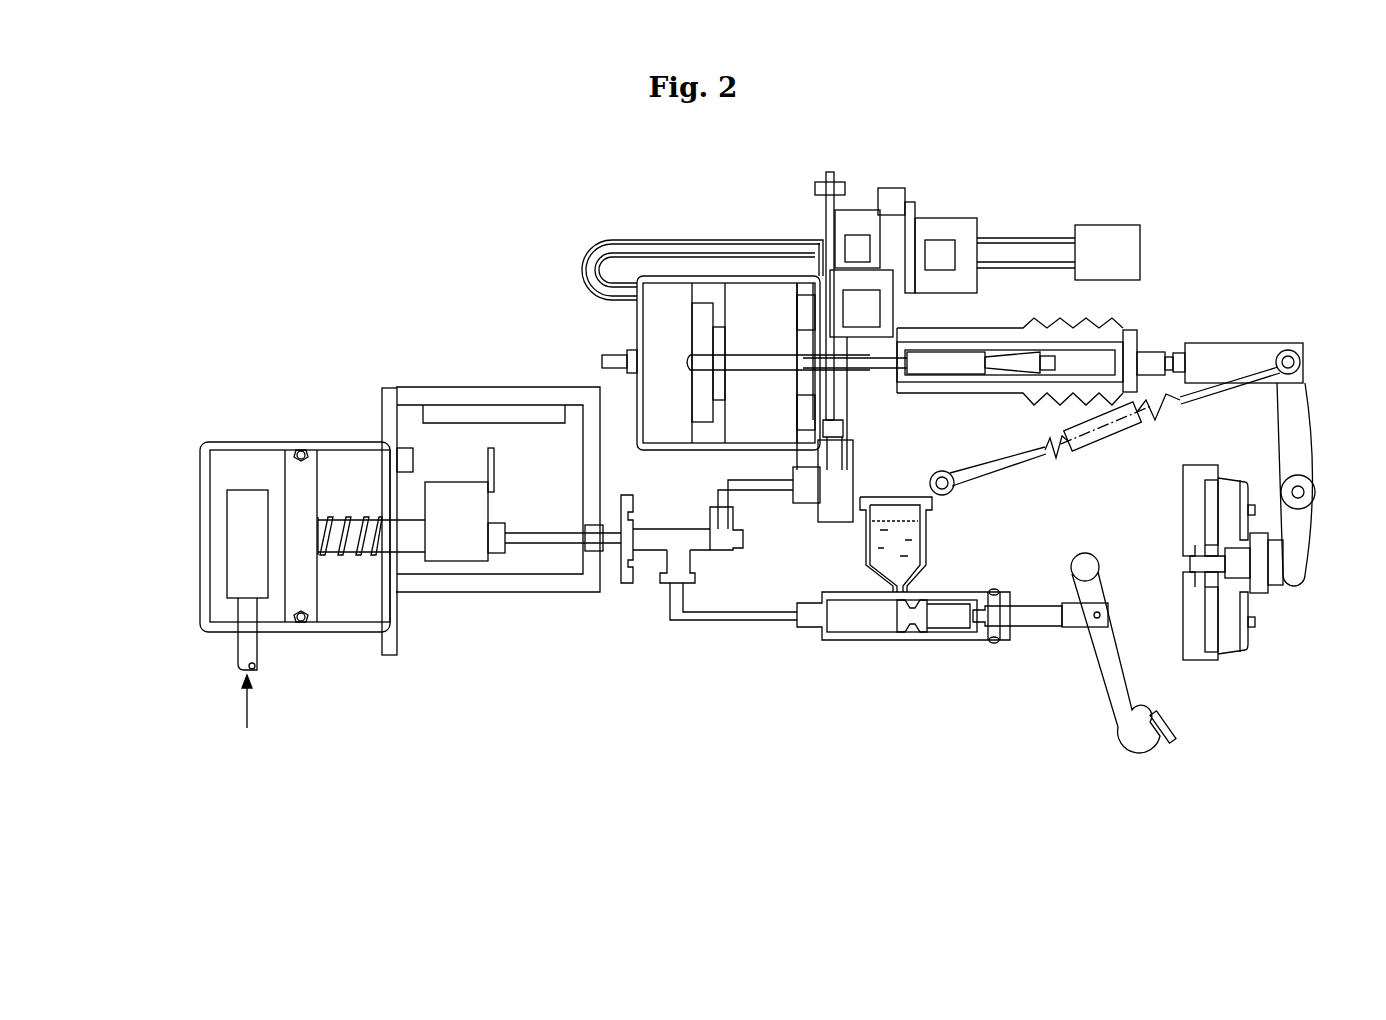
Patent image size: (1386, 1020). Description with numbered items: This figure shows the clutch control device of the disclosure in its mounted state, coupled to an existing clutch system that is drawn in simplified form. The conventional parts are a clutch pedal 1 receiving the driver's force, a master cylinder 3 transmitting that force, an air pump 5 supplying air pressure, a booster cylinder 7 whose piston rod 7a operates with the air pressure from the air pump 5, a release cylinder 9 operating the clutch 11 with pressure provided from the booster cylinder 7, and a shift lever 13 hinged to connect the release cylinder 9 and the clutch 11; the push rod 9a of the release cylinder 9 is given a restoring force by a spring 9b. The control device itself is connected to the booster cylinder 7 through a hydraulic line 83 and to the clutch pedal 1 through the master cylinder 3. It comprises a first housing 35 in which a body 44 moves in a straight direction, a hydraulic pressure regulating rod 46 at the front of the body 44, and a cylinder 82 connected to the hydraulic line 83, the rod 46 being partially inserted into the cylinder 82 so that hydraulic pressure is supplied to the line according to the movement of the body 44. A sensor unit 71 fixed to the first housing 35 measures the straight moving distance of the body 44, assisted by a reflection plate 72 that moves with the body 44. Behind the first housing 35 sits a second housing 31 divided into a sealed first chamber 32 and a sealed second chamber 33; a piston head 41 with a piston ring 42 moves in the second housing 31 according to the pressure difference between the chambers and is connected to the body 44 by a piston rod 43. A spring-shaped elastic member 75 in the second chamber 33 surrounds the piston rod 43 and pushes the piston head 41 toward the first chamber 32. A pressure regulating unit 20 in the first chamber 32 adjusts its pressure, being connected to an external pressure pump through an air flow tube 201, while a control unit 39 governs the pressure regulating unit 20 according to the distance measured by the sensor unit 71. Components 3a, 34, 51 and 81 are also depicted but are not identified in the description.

The clutch pedal 1 is at (1175, 742).
The master cylinder 3 is at (853, 640).
The piston 3a is at (942, 620).
The air pump 5 is at (1107, 226).
The booster cylinder 7 is at (671, 283).
The piston rod 7a is at (767, 358).
The release cylinder 9 is at (1057, 325).
The push rod 9a is at (1165, 345).
The spring 9b is at (1212, 404).
The clutch 11 is at (1186, 624).
The shift lever 13 is at (1308, 443).
The pressure regulating unit 20 is at (235, 533).
The air flow tube 201 is at (240, 650).
The second housing 31 is at (263, 446).
The first chamber 32 is at (228, 462).
The second chamber 33 is at (348, 576).
The plate 34 is at (386, 656).
The first housing 35 is at (477, 395).
The control unit 39 is at (532, 412).
The piston head 41 is at (320, 478).
The piston ring 42 is at (301, 452).
The piston rod 43 is at (408, 550).
The body 44 is at (450, 558).
The hydraulic pressure regulating rod 46 is at (521, 545).
The valve 51 is at (967, 222).
The sensor unit 71 is at (406, 448).
The reflection plate 72 is at (494, 466).
The elastic member 75 is at (343, 560).
The first hydraulic line 81 is at (696, 615).
The cylinder 82 is at (652, 545).
The hydraulic line 83 is at (762, 492).